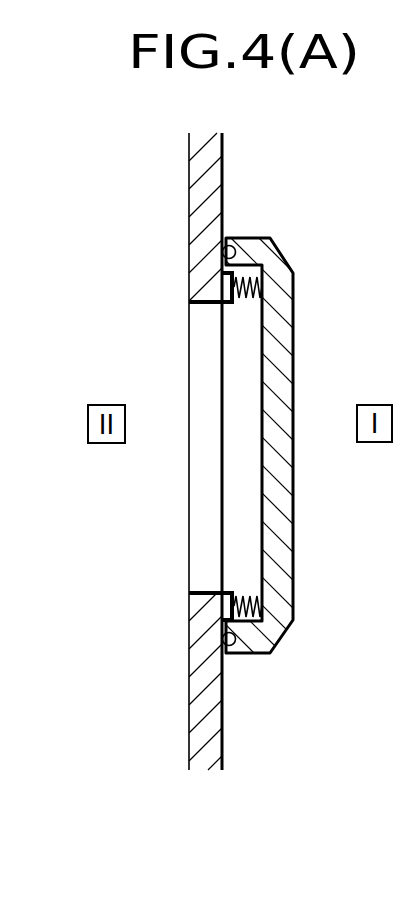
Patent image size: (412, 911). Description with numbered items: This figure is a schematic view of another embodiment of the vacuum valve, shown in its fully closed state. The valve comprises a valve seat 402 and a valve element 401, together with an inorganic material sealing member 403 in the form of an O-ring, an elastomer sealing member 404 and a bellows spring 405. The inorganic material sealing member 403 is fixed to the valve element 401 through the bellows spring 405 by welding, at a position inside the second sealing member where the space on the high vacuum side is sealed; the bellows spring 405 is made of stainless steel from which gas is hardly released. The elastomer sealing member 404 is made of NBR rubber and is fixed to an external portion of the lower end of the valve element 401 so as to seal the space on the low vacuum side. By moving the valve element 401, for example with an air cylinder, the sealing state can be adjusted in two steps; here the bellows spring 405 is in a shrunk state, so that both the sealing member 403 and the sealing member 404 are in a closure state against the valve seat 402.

The valve element 401 is at (285, 547).
The valve seat 402 is at (197, 710).
The inorganic material sealing member 403 is at (228, 286).
The elastomer sealing member 404 is at (233, 243).
The bellows spring 405 is at (257, 283).